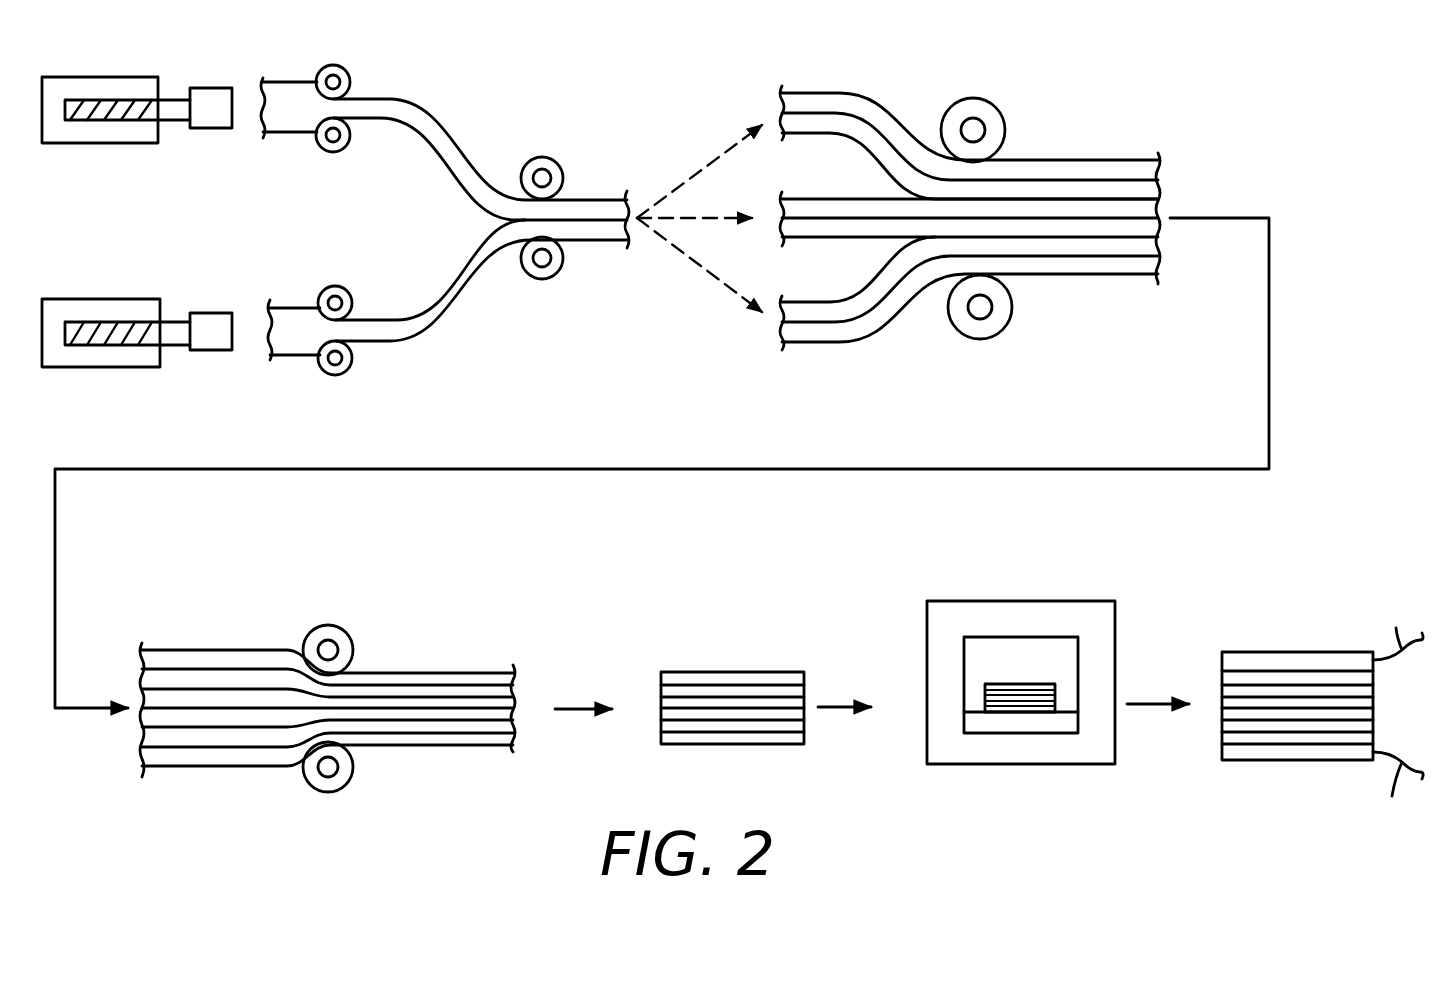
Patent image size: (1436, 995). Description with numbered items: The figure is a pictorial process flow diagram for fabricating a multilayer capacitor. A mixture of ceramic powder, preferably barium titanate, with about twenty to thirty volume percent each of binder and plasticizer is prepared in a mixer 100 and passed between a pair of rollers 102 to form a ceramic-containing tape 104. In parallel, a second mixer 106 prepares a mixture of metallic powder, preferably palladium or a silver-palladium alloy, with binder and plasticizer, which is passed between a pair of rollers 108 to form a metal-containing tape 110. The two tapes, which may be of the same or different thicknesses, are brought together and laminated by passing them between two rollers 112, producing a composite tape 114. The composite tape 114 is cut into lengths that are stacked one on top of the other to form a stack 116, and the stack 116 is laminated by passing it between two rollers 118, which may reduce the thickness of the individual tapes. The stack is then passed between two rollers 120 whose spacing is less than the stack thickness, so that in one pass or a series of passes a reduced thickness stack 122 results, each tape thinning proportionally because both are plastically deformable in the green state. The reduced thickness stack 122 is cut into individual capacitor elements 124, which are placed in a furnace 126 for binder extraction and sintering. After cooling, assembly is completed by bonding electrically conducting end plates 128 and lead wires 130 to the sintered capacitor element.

The mixer 100 is at (137, 77).
The pair of rollers 102 is at (373, 50).
The ceramic-containing tape 104 is at (463, 143).
The second mixer 106 is at (140, 367).
The pair of rollers 108 is at (343, 372).
The metal-containing tape 110 is at (458, 298).
The rollers 112 is at (550, 279).
The composite tape 114 is at (607, 221).
The stack 116 is at (911, 158).
The rollers 118 is at (997, 106).
The rollers 120 is at (342, 782).
The reduced thickness stack 122 is at (473, 737).
The capacitor elements 124 is at (656, 744).
The furnace 126 is at (965, 764).
The end plates 128 is at (1260, 652).
The lead wires 130 is at (1396, 628).